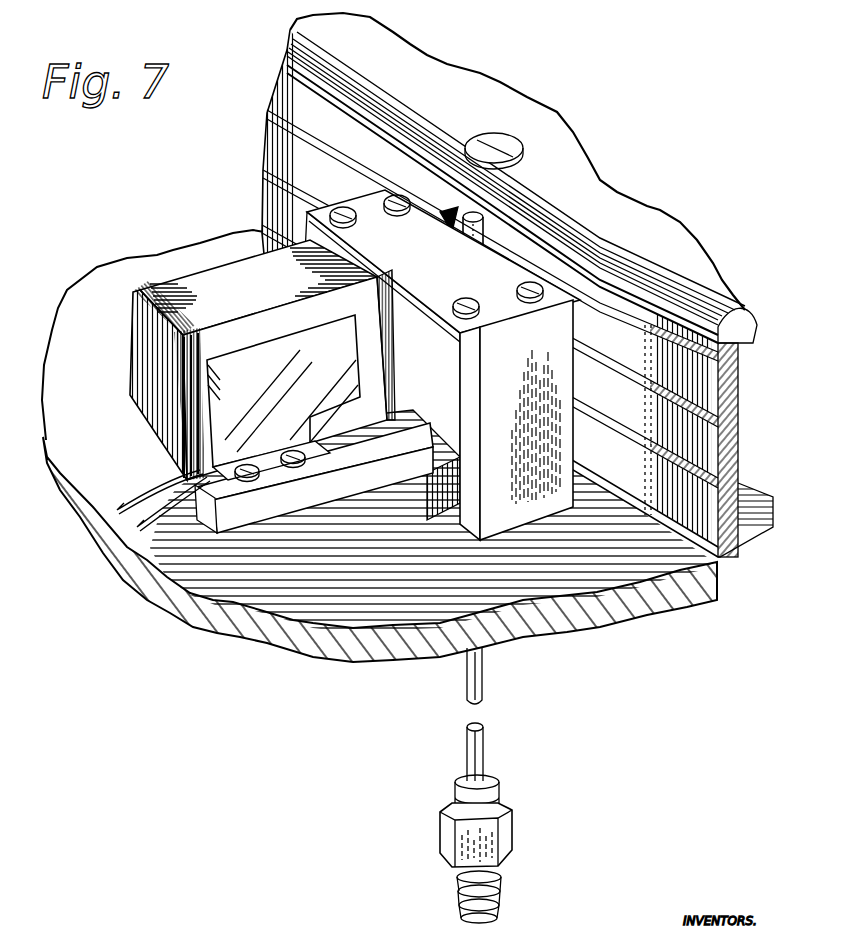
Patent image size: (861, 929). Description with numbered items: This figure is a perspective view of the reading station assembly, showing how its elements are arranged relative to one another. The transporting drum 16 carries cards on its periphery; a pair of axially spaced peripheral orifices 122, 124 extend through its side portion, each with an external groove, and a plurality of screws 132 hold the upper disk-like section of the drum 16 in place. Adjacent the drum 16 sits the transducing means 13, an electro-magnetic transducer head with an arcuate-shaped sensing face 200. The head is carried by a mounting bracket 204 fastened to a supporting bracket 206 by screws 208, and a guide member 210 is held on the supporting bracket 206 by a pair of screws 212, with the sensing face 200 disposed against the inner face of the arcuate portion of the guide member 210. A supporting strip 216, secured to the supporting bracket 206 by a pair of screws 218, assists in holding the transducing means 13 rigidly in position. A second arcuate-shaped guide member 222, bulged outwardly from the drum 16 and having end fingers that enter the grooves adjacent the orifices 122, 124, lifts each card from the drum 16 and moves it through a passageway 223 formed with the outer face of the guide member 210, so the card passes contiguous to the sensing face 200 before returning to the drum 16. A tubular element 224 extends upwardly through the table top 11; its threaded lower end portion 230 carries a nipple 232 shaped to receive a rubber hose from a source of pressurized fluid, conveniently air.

The table top 11 is at (105, 285).
The transducing means 13 is at (210, 278).
The drum 16 is at (524, 285).
The peripheral orifice 122 is at (735, 410).
The peripheral orifice 124 is at (735, 470).
The screws 132 is at (522, 145).
The sensing face 200 is at (443, 269).
The mounting bracket 204 is at (255, 490).
The supporting bracket 206 is at (433, 450).
The screws 208 is at (252, 465).
The guide member 210 is at (563, 312).
The screws 212 is at (394, 196).
The supporting strip 216 is at (458, 332).
The screws 218 is at (346, 221).
The arcuate-shaped guide member 222 is at (497, 188).
The passageway 223 is at (481, 265).
The tubular element 224 is at (484, 228).
The threaded lower end portion 230 is at (455, 785).
The nipple 232 is at (440, 840).